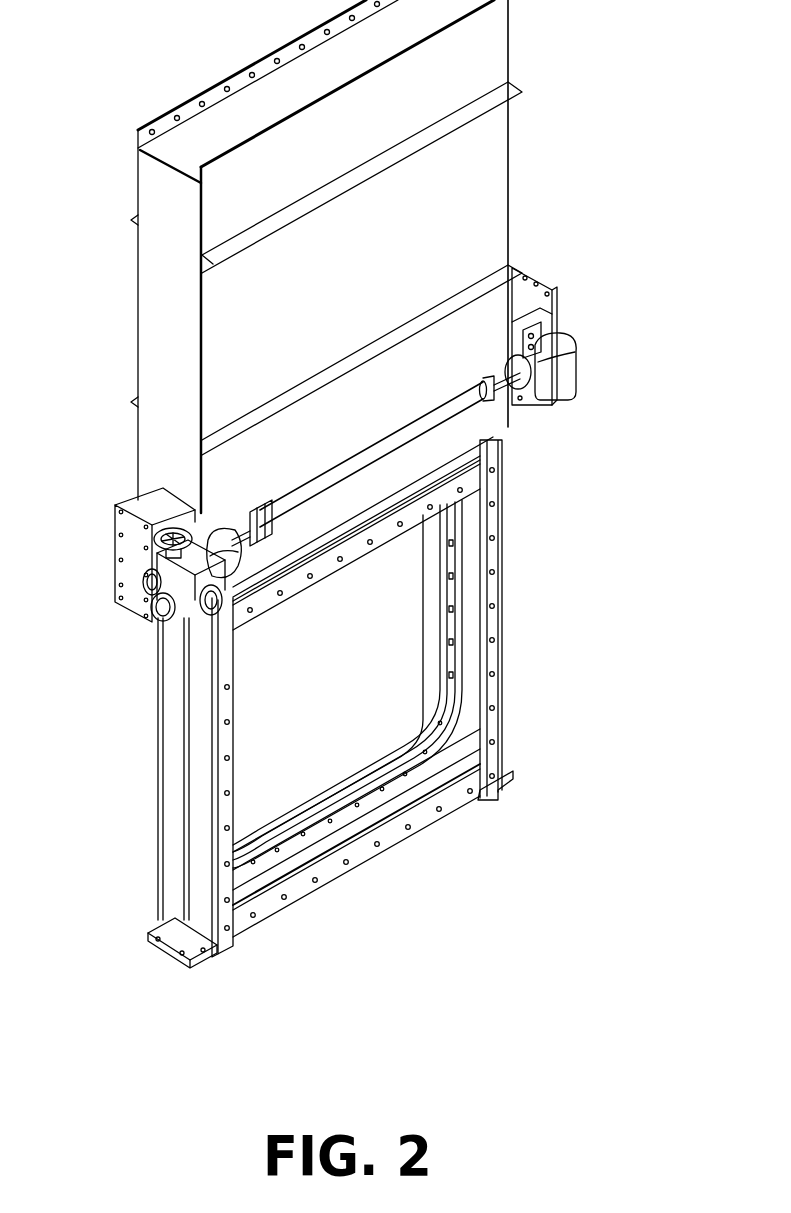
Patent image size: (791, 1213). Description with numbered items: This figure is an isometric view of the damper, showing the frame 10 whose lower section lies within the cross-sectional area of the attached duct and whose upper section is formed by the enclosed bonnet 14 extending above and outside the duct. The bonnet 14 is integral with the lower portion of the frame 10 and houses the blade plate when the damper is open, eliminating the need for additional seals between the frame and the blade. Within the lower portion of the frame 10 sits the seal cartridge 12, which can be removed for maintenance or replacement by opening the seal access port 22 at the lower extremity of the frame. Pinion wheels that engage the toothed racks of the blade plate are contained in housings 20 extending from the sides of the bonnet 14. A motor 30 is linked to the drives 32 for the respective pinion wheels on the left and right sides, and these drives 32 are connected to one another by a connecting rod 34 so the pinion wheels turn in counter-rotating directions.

The frame 10 is at (473, 580).
The seal cartridge 12 is at (455, 652).
The bonnet 14 is at (497, 175).
The housing 20 is at (528, 302).
The seal access port 22 is at (287, 913).
The motor 30 is at (158, 617).
The drive 32 is at (560, 383).
The connecting rod 34 is at (470, 405).